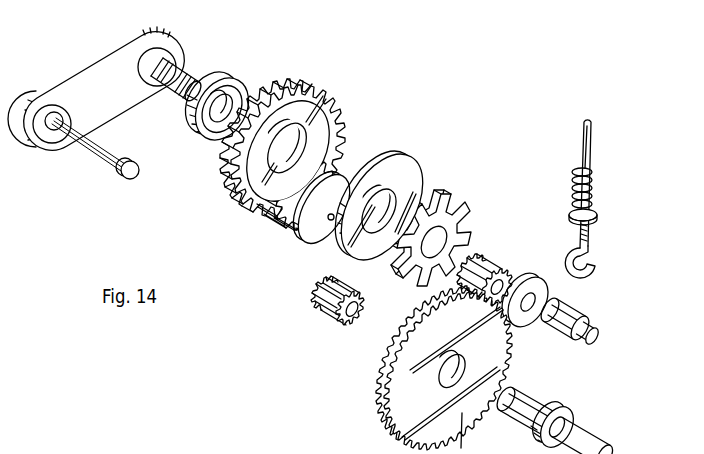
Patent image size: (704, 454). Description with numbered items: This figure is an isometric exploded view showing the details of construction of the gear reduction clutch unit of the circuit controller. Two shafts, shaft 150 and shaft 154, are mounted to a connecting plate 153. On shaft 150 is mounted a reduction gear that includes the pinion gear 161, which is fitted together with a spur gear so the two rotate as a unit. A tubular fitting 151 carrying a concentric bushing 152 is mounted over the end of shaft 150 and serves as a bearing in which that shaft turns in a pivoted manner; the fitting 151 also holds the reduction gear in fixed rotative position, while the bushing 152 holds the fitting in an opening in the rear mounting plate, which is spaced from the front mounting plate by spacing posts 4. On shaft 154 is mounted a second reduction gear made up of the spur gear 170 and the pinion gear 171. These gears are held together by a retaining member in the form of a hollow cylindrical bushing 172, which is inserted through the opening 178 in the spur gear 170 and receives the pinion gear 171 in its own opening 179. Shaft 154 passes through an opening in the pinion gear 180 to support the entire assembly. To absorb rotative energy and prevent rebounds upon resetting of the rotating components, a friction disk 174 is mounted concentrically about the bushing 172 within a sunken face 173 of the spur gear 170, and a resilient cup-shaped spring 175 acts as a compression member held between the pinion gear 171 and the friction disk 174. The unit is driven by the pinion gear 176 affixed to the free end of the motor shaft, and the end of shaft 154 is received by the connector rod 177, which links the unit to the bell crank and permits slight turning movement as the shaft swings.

The spacing posts 4 is at (185, 452).
The shaft 150 is at (88, 150).
The tubular fitting 151 is at (587, 447).
The concentric bushing 152 is at (567, 417).
The connecting plate 153 is at (90, 72).
The shaft 154 is at (173, 63).
The pinion gear 161 is at (323, 315).
The spur gear 170 is at (330, 100).
The pinion gear 171 is at (488, 268).
The hollow cylindrical bushing 172 is at (228, 83).
The sunken face 173 is at (307, 148).
The friction disk 174 is at (407, 187).
The resilient cup-shaped spring 175 is at (453, 208).
The pinion gear 176 is at (298, 237).
The connector rod 177 is at (595, 262).
The opening 178 is at (243, 175).
The opening 179 is at (213, 123).
The pinion gear 180 is at (517, 283).